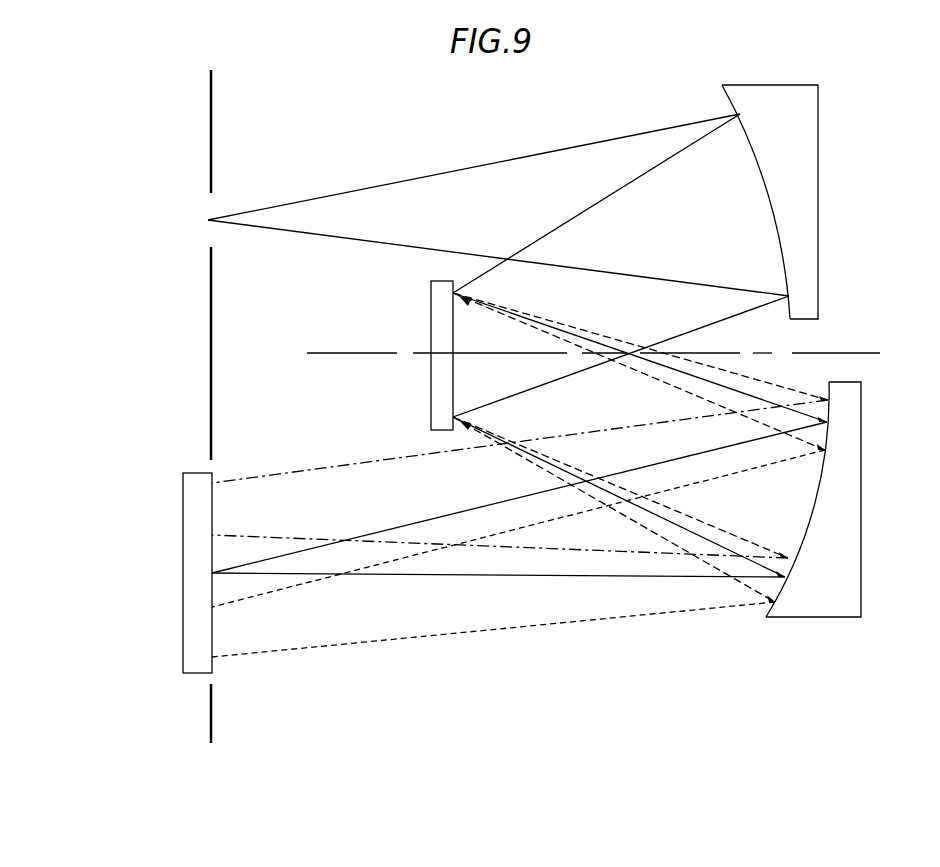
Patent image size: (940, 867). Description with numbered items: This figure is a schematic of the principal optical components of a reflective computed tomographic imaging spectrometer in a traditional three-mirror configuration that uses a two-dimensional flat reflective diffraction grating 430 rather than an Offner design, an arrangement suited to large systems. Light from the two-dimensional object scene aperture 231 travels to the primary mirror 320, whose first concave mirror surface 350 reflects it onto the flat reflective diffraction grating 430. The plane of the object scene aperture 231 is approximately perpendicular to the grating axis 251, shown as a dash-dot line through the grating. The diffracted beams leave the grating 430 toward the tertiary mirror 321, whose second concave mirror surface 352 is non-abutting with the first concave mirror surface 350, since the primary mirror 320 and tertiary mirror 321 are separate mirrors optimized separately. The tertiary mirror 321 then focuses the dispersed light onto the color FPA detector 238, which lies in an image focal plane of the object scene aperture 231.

The object scene aperture 231 is at (185, 213).
The grating axis 251 is at (358, 353).
The primary mirror 320 is at (771, 84).
The first concave mirror surface 350 is at (773, 200).
The two-dimensional flat reflective diffraction grating 430 is at (453, 375).
The color FPA detector 238 is at (212, 636).
The tertiary mirror 321 is at (813, 618).
The second concave mirror surface 352 is at (812, 513).